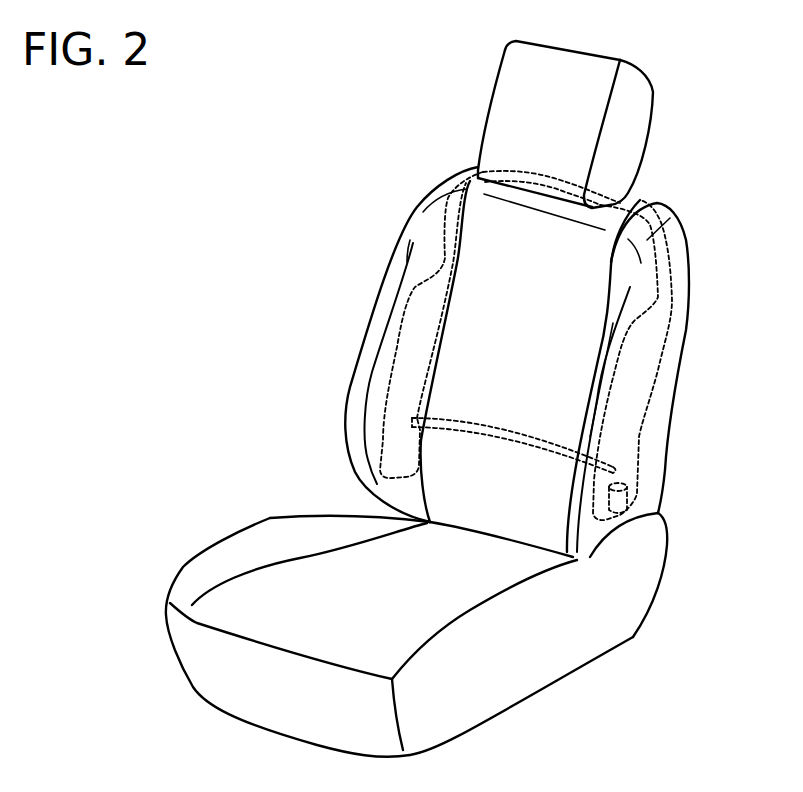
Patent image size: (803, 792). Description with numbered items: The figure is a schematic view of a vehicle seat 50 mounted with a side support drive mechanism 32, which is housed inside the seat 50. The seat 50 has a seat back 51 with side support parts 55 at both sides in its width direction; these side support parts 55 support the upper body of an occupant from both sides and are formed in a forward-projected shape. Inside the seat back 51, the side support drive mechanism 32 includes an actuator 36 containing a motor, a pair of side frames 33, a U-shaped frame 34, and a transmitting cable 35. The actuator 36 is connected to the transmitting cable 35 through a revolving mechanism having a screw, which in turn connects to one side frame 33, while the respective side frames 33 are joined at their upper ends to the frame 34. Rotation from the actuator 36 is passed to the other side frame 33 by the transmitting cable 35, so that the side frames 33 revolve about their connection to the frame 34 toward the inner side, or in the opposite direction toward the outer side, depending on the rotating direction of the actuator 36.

The seat 50 is at (438, 183).
The seat back 51 is at (681, 258).
The side support parts 55 is at (383, 290).
The side support drive mechanism 32 is at (513, 196).
The side frames 33 is at (403, 333).
The U-shaped frame 34 is at (622, 202).
The transmitting cable 35 is at (500, 425).
The actuator 36 is at (628, 493).